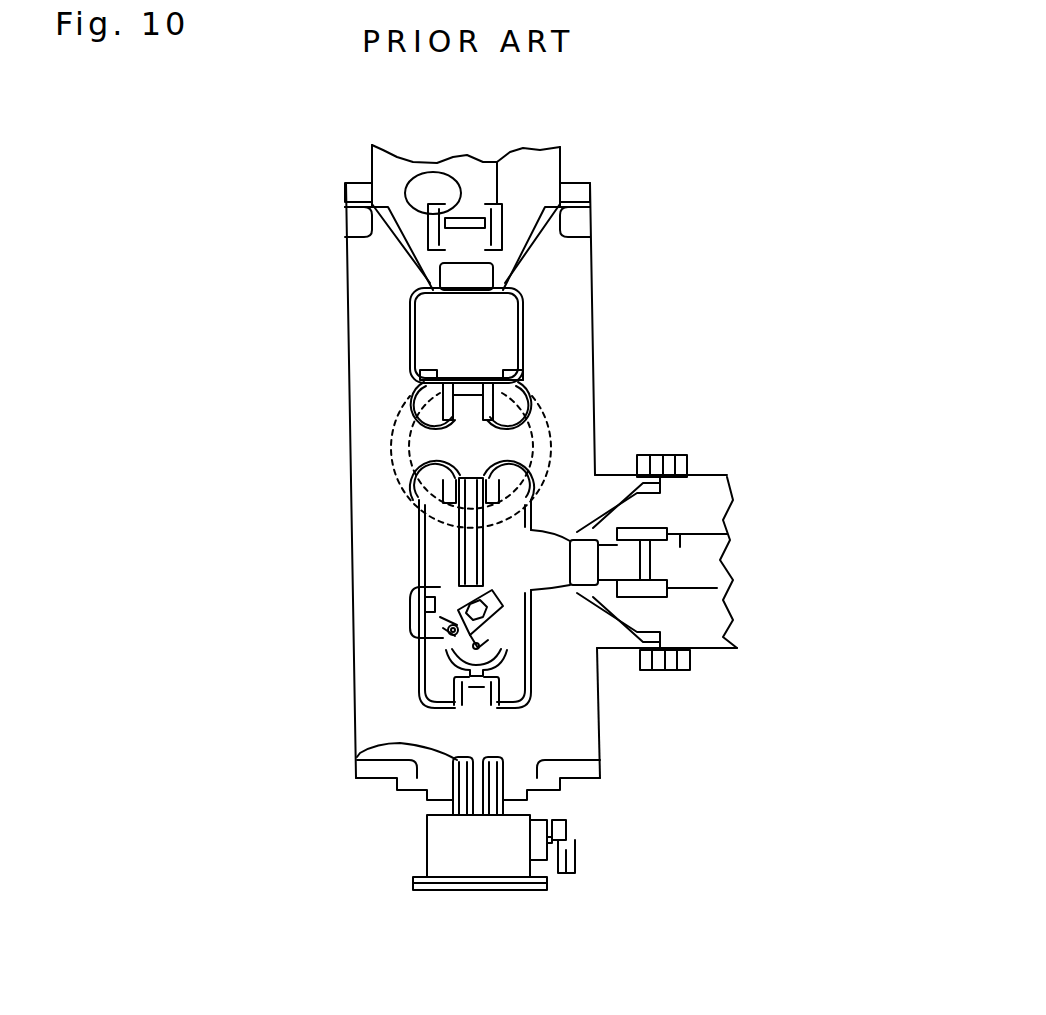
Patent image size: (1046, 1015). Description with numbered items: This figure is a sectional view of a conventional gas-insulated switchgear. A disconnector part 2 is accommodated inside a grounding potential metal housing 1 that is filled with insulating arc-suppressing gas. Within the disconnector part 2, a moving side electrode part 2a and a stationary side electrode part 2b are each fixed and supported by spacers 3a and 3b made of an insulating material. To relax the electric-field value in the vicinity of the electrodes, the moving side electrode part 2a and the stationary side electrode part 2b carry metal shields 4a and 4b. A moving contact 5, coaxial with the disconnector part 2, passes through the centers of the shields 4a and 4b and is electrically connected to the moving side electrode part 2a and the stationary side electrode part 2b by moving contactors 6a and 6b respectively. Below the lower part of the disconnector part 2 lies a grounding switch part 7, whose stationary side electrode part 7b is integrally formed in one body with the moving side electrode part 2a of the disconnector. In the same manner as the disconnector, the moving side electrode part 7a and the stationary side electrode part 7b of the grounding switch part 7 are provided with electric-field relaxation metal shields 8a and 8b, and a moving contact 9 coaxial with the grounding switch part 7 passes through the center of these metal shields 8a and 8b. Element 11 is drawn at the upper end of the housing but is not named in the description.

The grounding potential metal housing 1 is at (347, 332).
The disconnector part 2 is at (425, 448).
The moving side electrode part 2a is at (420, 510).
The stationary side electrode part 2b is at (523, 320).
The spacer 3a is at (662, 668).
The spacer 3b is at (592, 213).
The metal shield 4a is at (540, 470).
The metal shield 4b is at (407, 395).
The moving contact 5 is at (458, 571).
The moving contactor 6a is at (450, 487).
The moving contactor 6b is at (520, 403).
The grounding switch part 7 is at (500, 732).
The moving side electrode part 7a is at (507, 768).
The stationary side electrode part 7b is at (420, 661).
The electric-field relaxation metal shield 8a is at (357, 757).
The electric-field relaxation metal shield 8b is at (470, 707).
The moving contact 9 is at (430, 817).
The coupling 11 is at (408, 175).